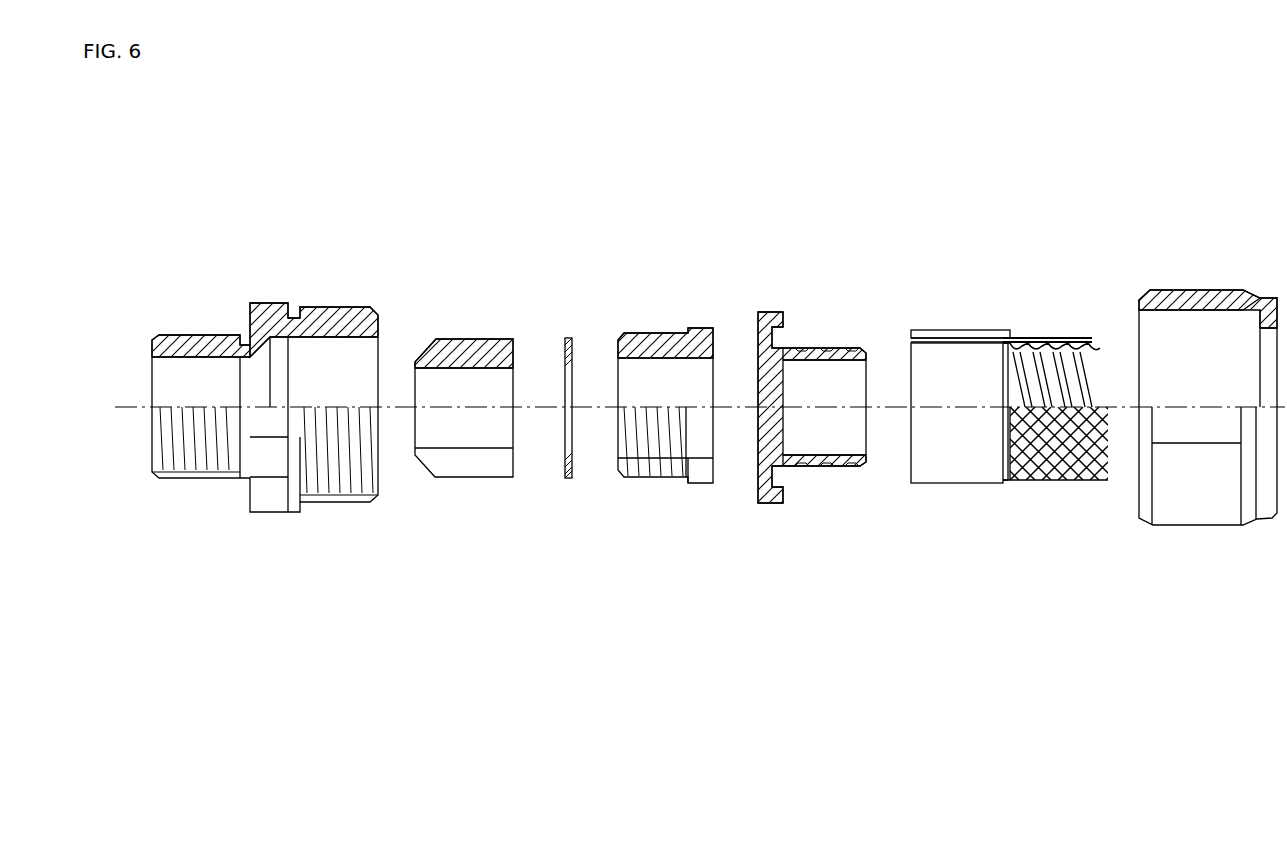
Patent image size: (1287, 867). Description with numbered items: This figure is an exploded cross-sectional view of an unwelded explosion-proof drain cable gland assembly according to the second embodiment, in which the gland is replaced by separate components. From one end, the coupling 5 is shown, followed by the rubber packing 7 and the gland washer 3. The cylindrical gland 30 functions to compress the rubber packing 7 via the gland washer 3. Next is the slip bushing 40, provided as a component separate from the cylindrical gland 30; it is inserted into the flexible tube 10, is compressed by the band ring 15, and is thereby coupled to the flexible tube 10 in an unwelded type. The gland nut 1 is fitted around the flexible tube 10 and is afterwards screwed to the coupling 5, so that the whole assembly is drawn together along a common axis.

The coupling 5 is at (203, 280).
The rubber packing 7 is at (462, 345).
The gland washer 3 is at (567, 338).
The cylindrical gland 30 is at (654, 335).
The slip bushing 40 is at (812, 350).
The flexible tube 10 is at (948, 310).
The band ring 15 is at (957, 458).
The gland nut 1 is at (1197, 290).